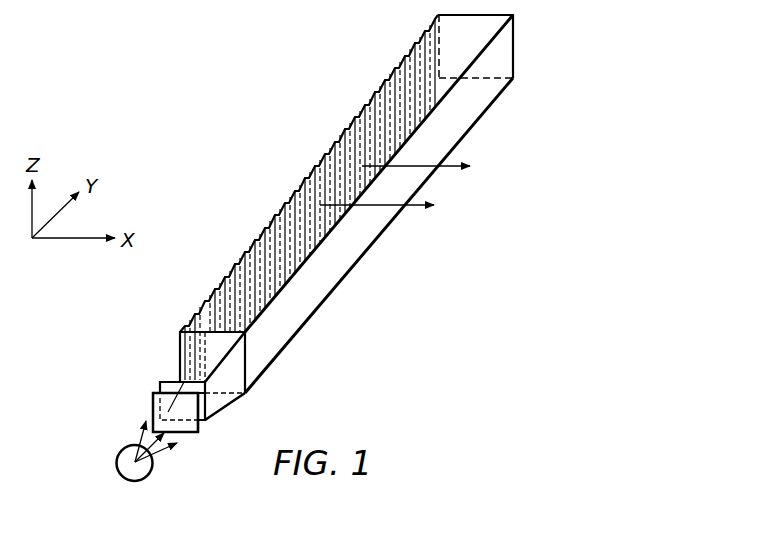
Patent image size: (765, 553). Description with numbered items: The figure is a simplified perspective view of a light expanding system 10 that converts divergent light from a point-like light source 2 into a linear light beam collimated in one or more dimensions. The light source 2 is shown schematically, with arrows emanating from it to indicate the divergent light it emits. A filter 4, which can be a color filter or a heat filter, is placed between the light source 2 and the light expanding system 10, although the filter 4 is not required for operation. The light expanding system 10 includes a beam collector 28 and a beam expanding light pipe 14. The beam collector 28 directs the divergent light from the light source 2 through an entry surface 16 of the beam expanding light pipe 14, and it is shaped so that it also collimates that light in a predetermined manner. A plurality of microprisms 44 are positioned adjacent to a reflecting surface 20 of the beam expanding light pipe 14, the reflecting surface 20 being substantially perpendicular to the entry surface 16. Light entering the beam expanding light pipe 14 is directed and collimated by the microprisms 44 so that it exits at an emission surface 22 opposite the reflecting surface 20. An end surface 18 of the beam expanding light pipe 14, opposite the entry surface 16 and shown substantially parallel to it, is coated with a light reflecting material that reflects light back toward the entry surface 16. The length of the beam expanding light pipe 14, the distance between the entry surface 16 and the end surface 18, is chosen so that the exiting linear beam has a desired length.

The light source 2 is at (115, 455).
The filter 4 is at (188, 435).
The light expanding system 10 is at (190, 118).
The beam expanding light pipe 14 is at (380, 92).
The entry surface 16 is at (225, 372).
The end surface 18 is at (502, 60).
The reflecting surface 20 is at (269, 220).
The emission surface 22 is at (357, 255).
The beam collector 28 is at (170, 372).
The microprisms 44 is at (337, 137).